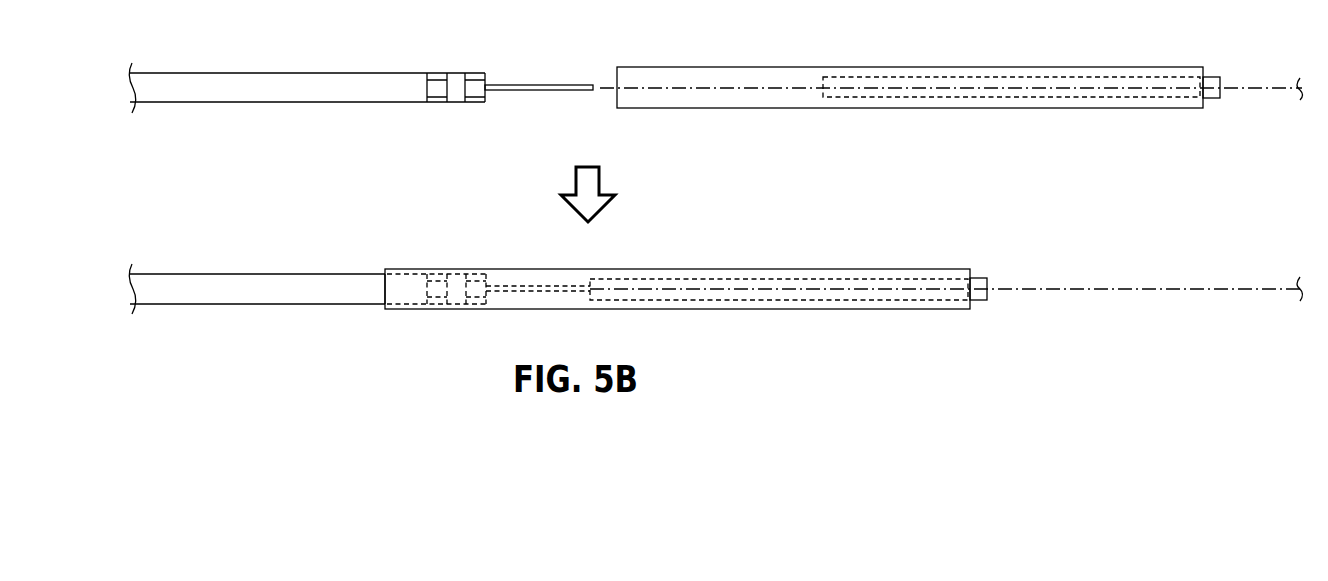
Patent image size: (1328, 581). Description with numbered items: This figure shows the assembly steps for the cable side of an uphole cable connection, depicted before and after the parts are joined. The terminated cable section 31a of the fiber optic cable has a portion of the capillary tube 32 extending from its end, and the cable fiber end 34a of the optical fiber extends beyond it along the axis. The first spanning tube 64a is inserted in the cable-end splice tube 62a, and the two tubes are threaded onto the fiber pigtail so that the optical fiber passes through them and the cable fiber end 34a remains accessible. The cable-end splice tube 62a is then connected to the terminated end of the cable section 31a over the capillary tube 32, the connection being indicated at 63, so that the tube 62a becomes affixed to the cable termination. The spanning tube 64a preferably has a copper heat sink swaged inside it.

The cable section 31a is at (186, 72).
The capillary tube 32 is at (518, 83).
The cable fiber end 34a is at (1275, 91).
The cable-end tube 62a is at (765, 66).
The first spanning tube 64a is at (963, 76).
The joint 63 is at (383, 269).